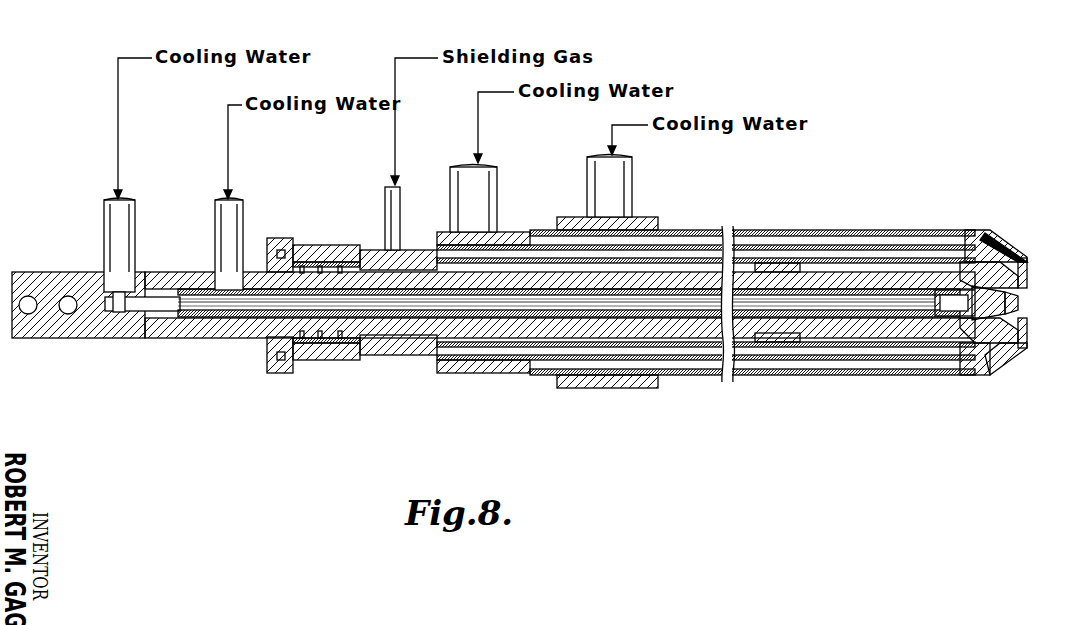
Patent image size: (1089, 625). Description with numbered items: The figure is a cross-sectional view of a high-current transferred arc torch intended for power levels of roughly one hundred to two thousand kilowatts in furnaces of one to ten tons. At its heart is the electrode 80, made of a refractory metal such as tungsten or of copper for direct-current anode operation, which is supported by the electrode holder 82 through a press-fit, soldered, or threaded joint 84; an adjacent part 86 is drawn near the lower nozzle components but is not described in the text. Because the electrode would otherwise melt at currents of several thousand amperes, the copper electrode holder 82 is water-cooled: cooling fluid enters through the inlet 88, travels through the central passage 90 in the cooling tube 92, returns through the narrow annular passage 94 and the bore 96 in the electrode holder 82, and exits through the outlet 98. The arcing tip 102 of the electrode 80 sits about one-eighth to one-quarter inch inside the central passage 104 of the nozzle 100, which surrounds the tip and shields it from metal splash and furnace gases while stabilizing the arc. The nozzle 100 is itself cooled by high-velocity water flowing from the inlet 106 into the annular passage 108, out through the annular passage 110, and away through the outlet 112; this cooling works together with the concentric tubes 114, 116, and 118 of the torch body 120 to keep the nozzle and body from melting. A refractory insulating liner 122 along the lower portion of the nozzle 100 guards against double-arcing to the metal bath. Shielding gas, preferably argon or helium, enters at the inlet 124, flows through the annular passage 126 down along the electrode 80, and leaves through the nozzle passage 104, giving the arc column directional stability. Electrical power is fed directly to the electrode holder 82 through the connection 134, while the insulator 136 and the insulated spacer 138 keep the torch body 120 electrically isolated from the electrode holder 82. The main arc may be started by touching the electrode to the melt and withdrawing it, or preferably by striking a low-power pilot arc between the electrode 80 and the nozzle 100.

The electrode 80 is at (1028, 325).
The electrode holder 82 is at (865, 280).
The joint 84 is at (978, 365).
The lower nozzle insert 86 is at (960, 340).
The inlet 88 is at (106, 232).
The central passage 90 is at (880, 300).
The cooling tube 92 is at (915, 300).
The annular passage 94 is at (832, 290).
The bore 96 is at (727, 230).
The outlet 98 is at (216, 232).
The nozzle 100 is at (990, 248).
The arcing tip 102 is at (1022, 305).
The central passage 104 is at (1022, 292).
The inlet 106 is at (452, 210).
The annular passage 108 is at (944, 255).
The annular passage 110 is at (961, 258).
The outlet 112 is at (618, 178).
The concentric tube 114 is at (698, 382).
The concentric tube 116 is at (848, 362).
The concentric tube 118 is at (793, 345).
The torch body 120 is at (747, 378).
The refractory insulating liner 122 is at (1028, 260).
The inlet 124 is at (386, 210).
The annular passage 126 is at (675, 340).
The connection 134 is at (58, 283).
The insulator 136 is at (268, 268).
The insulated spacer 138 is at (790, 265).